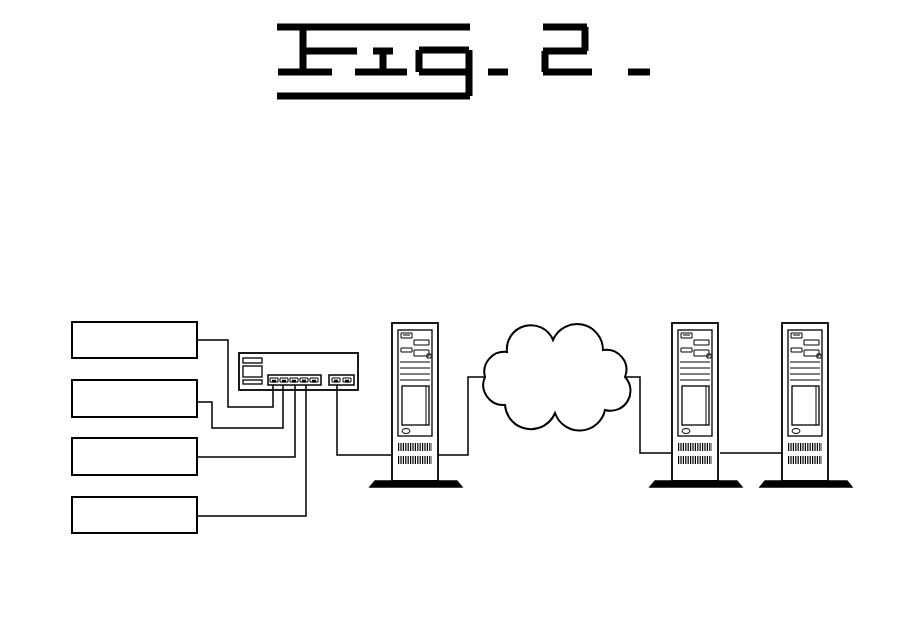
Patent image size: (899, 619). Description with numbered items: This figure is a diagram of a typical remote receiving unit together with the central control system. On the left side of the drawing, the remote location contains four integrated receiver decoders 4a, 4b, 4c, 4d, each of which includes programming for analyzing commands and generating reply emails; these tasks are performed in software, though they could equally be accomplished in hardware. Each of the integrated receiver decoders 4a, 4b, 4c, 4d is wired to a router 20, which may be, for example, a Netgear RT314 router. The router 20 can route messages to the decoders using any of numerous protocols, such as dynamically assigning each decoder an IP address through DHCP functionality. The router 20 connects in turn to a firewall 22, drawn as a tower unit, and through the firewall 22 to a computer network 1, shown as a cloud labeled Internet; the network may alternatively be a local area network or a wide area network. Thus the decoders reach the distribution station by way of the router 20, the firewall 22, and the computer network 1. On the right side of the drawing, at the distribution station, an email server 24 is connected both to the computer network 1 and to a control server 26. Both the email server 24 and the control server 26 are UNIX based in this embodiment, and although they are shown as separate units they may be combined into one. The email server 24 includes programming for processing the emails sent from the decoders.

The integrated receiver decoder 4a is at (88, 322).
The integrated receiver decoder 4b is at (98, 380).
The integrated receiver decoder 4c is at (100, 438).
The integrated receiver decoder 4d is at (110, 533).
The router 20 is at (268, 353).
The firewall 22 is at (407, 323).
The computer network 1 is at (542, 327).
The email server 24 is at (687, 323).
The control server 26 is at (797, 323).